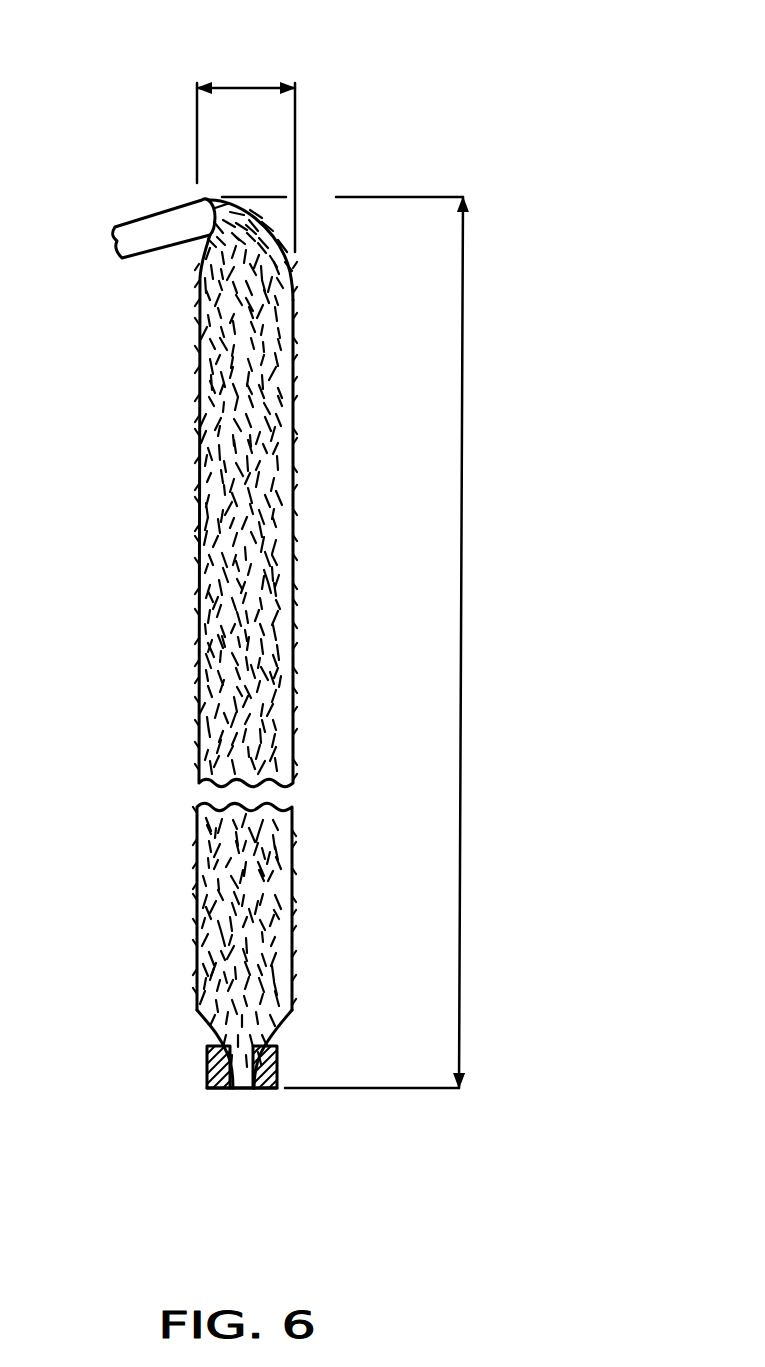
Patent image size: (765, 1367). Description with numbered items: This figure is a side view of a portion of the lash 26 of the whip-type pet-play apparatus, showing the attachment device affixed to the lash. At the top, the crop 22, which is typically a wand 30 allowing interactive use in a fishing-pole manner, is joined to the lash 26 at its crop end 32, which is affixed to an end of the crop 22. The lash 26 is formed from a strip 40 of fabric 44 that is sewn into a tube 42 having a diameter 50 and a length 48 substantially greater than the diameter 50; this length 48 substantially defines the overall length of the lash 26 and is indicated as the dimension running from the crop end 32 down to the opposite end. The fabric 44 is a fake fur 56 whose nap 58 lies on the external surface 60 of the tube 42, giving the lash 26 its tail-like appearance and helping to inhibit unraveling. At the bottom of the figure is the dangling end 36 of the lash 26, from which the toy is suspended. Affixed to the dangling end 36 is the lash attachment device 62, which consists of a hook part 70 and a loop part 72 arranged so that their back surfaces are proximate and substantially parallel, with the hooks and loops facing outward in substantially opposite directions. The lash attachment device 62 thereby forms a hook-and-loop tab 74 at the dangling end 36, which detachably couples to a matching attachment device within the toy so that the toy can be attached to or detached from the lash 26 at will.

The crop 22 is at (159, 222).
The wand 30 is at (133, 227).
The crop end 32 is at (305, 210).
The lash 26 is at (200, 384).
The tube 42 is at (200, 642).
The fake fur 56 is at (282, 683).
The nap 58 is at (293, 580).
The strip 40 is at (207, 893).
The fabric 44 is at (210, 975).
The external surface 60 is at (280, 858).
The dangling end 36 is at (277, 1042).
The hook part 70 is at (207, 1078).
The loop part 72 is at (278, 1073).
The lash attachment device 62 is at (219, 1090).
The hook-and-loop tab 74 is at (282, 1112).
The length 48 is at (462, 548).
The diameter 50 is at (255, 88).